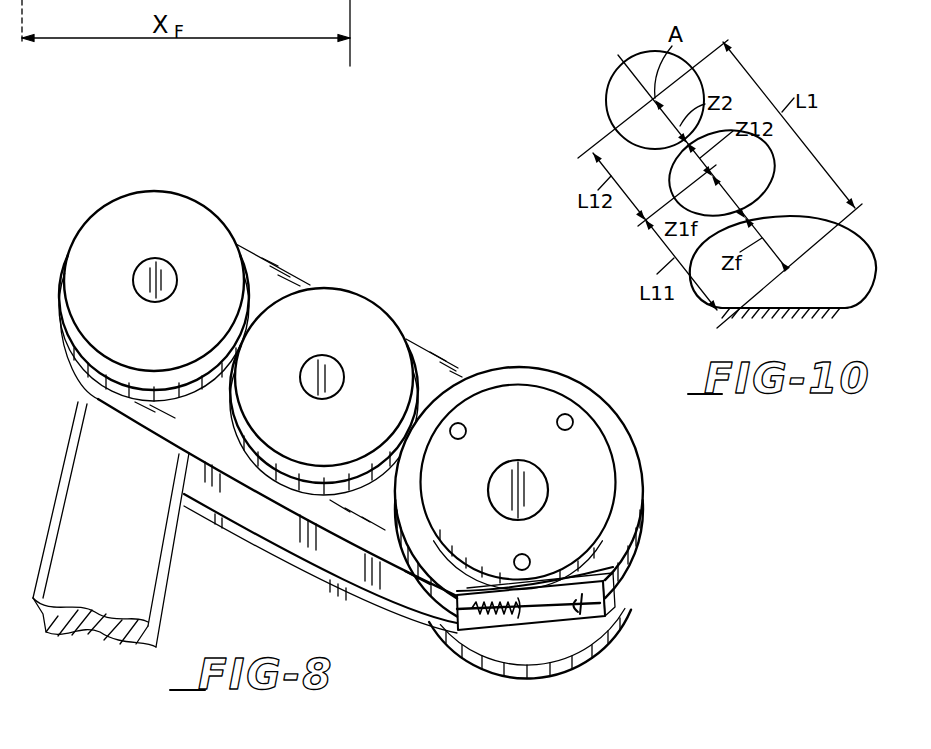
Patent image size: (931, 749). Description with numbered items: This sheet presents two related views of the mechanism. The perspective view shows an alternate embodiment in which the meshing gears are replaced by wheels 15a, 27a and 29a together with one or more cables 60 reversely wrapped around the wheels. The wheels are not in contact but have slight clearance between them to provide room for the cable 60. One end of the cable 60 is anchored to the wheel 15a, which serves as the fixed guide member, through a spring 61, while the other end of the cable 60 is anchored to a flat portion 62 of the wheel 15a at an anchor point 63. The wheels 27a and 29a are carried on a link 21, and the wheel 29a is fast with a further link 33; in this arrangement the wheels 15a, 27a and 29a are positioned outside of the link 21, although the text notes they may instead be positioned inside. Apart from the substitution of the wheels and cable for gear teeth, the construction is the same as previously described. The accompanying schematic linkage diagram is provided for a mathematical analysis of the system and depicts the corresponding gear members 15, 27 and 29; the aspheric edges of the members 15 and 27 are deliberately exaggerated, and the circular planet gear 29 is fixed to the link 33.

In FIG. 8, the wheel 29a is at (200, 226).
In FIG. 8, the wheel 27a is at (372, 332).
In FIG. 8, the wheel 15a is at (592, 490).
In FIG. 8, the link 21 is at (273, 550).
In FIG. 8, the link 33 is at (163, 604).
In FIG. 8, the cable 60 is at (423, 587).
In FIG. 8, the spring 61 is at (487, 625).
In FIG. 8, the flat portion 62 is at (574, 578).
In FIG. 8, the anchor point 63 is at (595, 613).
In FIG. 10, the circular planet gear 29 is at (606, 98).
In FIG. 10, the gear 27 is at (774, 184).
In FIG. 10, the gear 15 is at (870, 283).